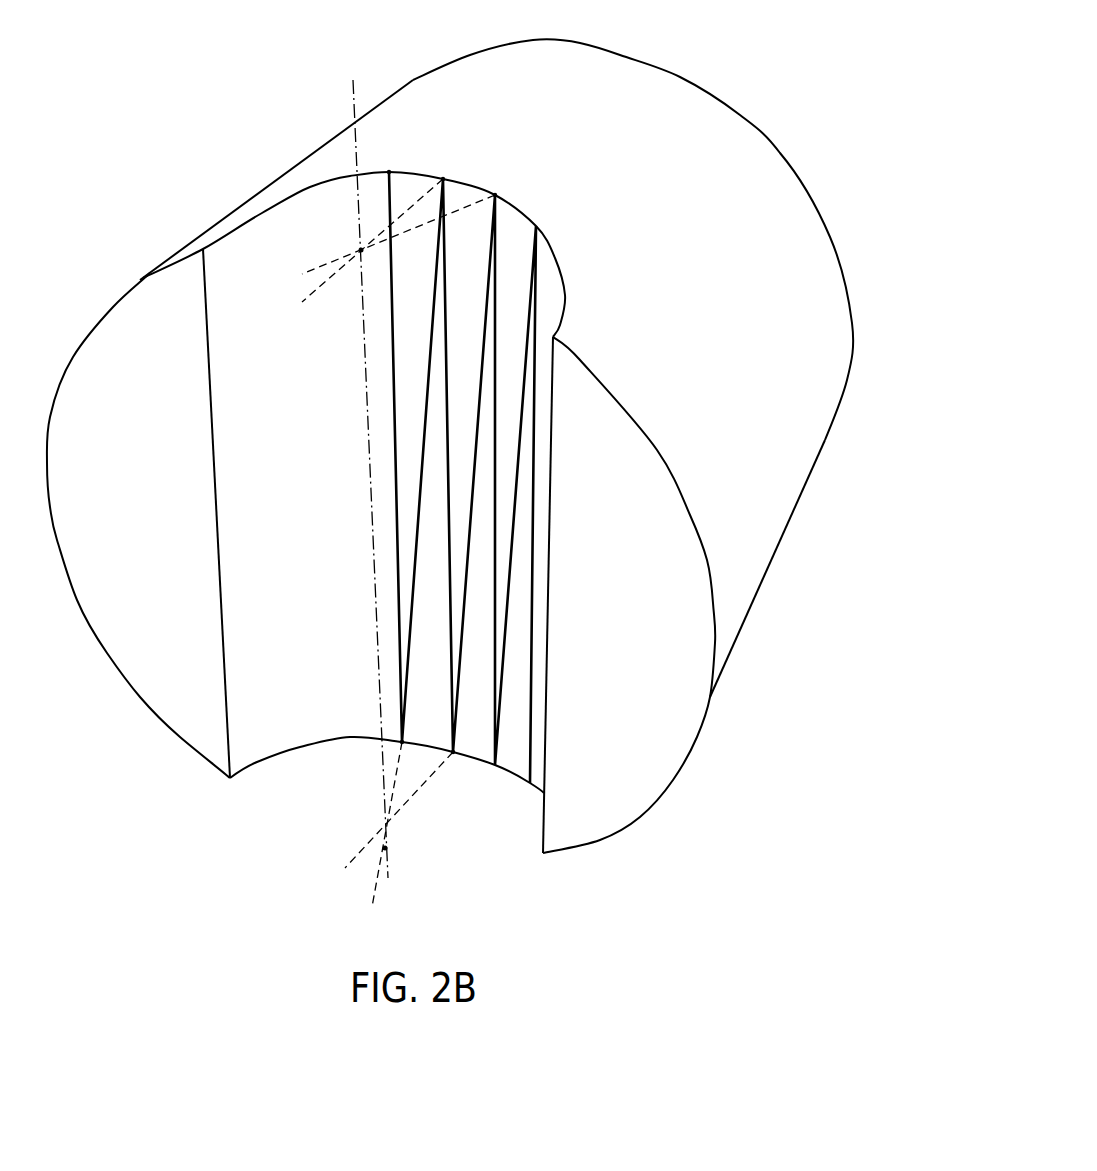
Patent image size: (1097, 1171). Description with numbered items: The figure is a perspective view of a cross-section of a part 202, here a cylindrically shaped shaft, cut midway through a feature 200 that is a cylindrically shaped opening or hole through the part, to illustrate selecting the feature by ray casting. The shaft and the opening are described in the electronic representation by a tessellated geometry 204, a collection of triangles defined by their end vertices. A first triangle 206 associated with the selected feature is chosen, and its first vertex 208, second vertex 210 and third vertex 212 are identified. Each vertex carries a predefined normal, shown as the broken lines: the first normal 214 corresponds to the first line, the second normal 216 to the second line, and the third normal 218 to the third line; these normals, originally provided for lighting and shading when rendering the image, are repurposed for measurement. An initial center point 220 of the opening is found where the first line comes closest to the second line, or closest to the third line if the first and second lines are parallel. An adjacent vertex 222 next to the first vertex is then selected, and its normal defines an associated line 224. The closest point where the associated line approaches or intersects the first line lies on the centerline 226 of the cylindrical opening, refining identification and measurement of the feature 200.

The feature 200 is at (257, 762).
The part 202 is at (203, 249).
The tessellated geometry 204 is at (708, 84).
The first triangle 206 is at (413, 420).
The first vertex V1 208 is at (443, 178).
The second vertex V2 210 is at (390, 745).
The third vertex V3 212 is at (456, 764).
The normal of first vertex 214 is at (373, 236).
The normal of second vertex 216 is at (383, 875).
The normal of third vertex 218 is at (381, 845).
The initial center point PC 220 is at (360, 250).
The adjacent vertex VN 222 is at (497, 195).
The associated line LN 224 is at (426, 226).
The centerline 226 is at (371, 495).